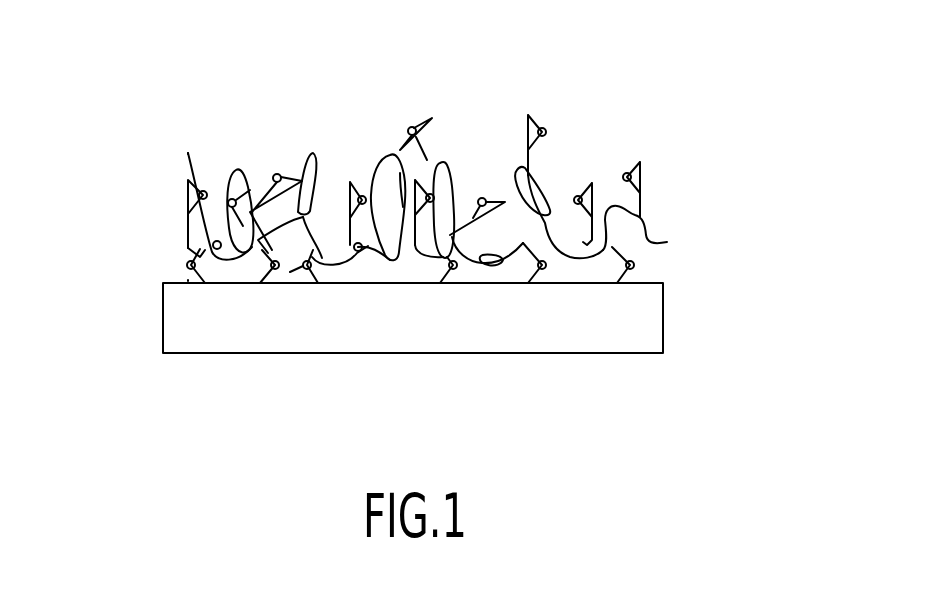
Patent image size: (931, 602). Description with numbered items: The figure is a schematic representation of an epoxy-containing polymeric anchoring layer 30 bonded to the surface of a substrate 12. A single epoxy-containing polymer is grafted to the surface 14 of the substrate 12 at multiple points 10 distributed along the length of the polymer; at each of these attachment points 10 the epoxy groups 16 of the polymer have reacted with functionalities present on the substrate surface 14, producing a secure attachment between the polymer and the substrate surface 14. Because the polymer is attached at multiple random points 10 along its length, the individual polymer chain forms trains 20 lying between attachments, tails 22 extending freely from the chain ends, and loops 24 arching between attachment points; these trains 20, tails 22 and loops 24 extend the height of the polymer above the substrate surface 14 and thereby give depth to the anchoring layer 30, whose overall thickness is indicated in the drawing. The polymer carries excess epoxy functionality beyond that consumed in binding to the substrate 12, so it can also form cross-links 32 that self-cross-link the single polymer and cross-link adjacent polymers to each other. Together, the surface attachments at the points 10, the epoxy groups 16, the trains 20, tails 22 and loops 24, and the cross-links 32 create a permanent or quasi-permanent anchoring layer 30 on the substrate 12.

The attachment points 10 is at (166, 268).
The substrate 12 is at (238, 353).
The substrate surface 14 is at (387, 285).
The epoxy groups 16 is at (418, 122).
The trains 20 is at (498, 289).
The tails 22 is at (679, 240).
The loops 24 is at (302, 142).
The anchoring layer 30 is at (120, 153).
The cross-links 32 is at (328, 205).